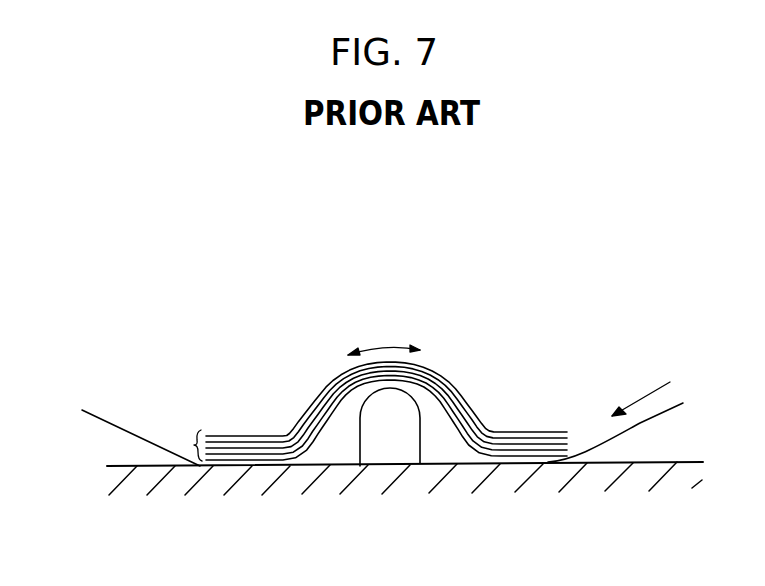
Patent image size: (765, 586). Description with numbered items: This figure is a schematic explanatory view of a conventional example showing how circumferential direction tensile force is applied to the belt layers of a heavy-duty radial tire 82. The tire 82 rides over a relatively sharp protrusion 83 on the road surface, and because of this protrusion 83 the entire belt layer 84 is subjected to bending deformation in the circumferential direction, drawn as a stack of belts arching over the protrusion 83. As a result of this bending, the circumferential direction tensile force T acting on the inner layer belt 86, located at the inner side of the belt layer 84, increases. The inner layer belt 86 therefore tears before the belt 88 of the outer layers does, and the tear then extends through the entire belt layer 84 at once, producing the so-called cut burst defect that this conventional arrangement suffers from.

The heavy-duty radial tire 82 is at (100, 433).
The protrusion 83 is at (390, 450).
The belt layer 84 is at (194, 445).
The inner layer belt 86 is at (316, 398).
The belt of the outer layers 88 is at (431, 393).
The circumferential direction tensile force T is at (385, 348).